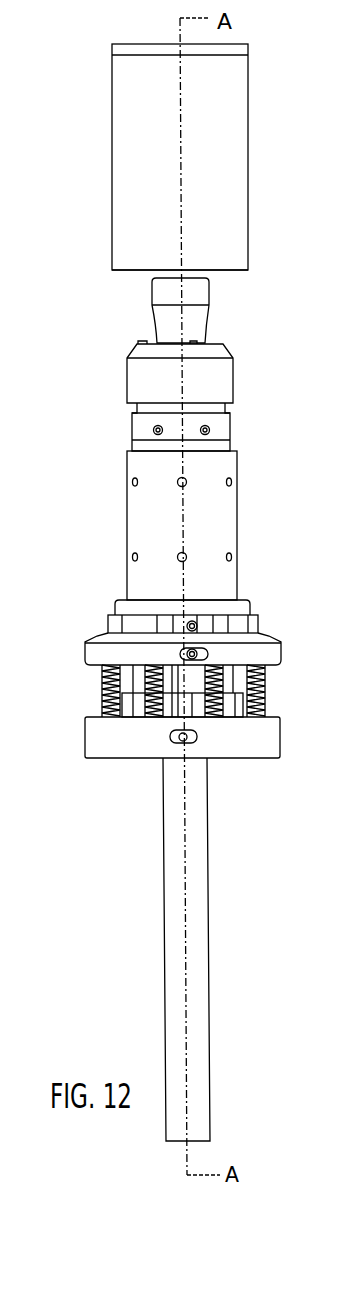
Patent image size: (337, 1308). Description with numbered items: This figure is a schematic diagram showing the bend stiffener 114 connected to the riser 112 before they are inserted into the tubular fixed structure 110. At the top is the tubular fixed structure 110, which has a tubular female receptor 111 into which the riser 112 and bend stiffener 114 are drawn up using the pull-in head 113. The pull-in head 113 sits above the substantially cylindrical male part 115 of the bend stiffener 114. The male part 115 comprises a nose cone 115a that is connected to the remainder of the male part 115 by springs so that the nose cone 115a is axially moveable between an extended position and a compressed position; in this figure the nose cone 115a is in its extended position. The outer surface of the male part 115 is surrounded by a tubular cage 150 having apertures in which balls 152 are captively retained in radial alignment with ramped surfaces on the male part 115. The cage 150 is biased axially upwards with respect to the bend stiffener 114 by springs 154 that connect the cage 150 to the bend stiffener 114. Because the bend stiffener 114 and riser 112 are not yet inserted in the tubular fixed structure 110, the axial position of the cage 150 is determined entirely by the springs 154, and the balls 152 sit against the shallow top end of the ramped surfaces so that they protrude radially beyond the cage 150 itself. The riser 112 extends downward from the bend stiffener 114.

The tubular fixed structure 110 is at (112, 172).
The tubular female receptor 111 is at (237, 272).
The riser 112 is at (193, 897).
The pull-in head 113 is at (207, 328).
The bend stiffener 114 is at (88, 739).
The male part 115 is at (150, 445).
The nose cone 115a is at (220, 385).
The cage 150 is at (217, 520).
The balls 152 is at (233, 557).
The springs 154 is at (265, 688).